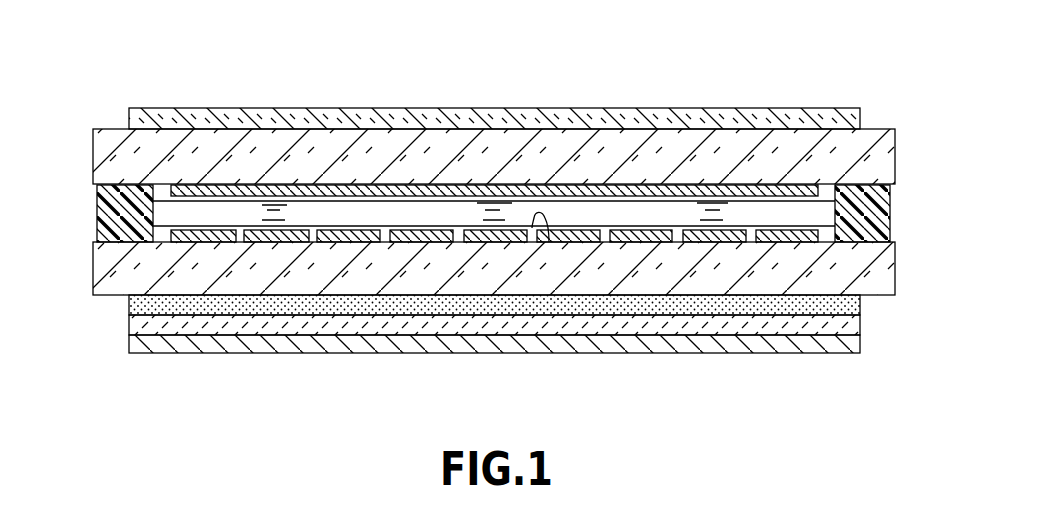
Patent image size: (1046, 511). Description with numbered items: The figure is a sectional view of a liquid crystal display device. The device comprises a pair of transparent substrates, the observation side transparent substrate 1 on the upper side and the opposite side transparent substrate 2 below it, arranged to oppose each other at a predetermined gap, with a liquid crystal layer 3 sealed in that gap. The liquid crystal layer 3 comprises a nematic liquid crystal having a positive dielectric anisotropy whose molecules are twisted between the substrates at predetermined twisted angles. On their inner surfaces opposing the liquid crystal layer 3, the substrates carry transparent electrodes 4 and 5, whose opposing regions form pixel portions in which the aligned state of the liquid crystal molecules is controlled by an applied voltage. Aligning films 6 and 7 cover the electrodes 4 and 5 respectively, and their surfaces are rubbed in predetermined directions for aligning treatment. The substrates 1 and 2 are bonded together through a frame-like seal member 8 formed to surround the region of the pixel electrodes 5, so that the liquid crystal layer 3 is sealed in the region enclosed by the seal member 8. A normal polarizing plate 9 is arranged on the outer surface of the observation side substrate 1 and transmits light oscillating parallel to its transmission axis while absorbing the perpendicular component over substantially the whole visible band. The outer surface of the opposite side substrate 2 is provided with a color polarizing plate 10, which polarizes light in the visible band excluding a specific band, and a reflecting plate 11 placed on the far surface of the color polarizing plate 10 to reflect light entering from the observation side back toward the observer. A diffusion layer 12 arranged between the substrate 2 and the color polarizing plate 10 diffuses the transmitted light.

The observation side transparent substrate 1 is at (884, 160).
The opposite side transparent substrate 2 is at (878, 272).
The liquid crystal layer 3 is at (818, 212).
The transparent electrode 4 is at (413, 193).
The transparent electrodes 5 is at (253, 242).
The aligning film 6 is at (562, 208).
The aligning film 7 is at (549, 242).
The seal member 8 is at (112, 218).
The normal polarizing plate 9 is at (798, 118).
The color polarizing plate 10 is at (325, 325).
The reflecting plate 11 is at (670, 342).
The diffusion layer 12 is at (130, 305).